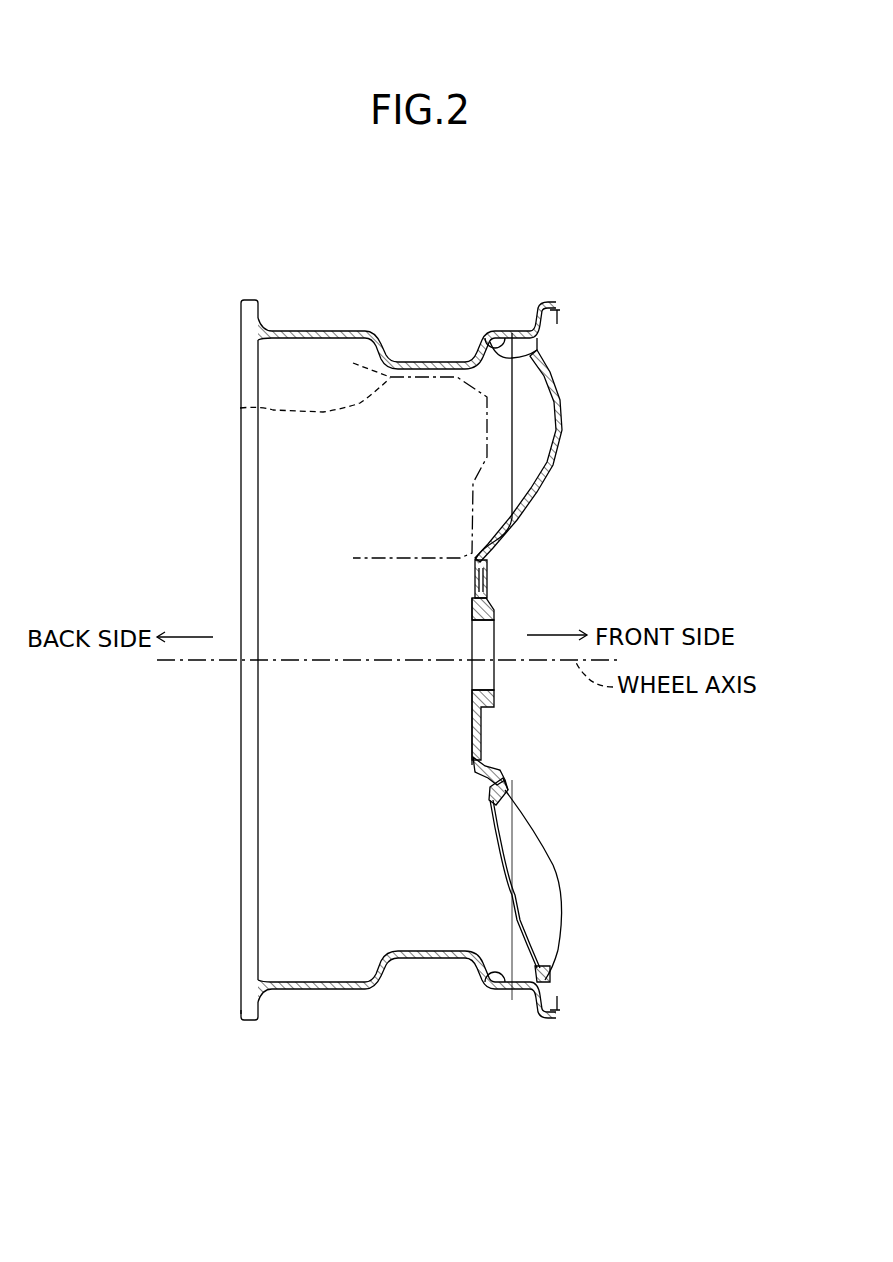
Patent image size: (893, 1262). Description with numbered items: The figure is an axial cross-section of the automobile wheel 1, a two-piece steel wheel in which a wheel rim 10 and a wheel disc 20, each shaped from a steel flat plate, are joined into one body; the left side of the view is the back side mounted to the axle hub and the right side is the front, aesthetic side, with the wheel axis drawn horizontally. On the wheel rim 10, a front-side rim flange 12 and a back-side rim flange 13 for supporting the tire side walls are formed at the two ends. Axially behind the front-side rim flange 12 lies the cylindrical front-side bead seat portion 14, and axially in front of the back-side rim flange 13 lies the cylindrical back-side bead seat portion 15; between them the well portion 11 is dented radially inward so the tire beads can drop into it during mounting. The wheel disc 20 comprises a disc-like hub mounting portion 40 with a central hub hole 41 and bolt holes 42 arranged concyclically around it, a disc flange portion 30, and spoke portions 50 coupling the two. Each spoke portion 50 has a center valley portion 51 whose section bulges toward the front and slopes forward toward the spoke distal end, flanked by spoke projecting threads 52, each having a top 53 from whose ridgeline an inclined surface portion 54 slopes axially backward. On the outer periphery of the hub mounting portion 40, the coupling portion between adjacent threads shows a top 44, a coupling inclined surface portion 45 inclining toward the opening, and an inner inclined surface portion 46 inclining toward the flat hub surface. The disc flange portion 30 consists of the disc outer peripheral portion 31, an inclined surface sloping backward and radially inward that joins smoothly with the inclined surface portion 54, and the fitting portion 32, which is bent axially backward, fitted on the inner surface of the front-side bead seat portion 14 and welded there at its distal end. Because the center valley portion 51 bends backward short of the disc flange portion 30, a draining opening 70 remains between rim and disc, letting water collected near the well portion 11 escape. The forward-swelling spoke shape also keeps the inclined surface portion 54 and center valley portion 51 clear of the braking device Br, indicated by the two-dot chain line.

The automobile wheel 1 is at (628, 247).
The wheel rim 10 is at (238, 384).
The well portion 11 is at (408, 960).
The front-side rim flange 12 is at (545, 1019).
The back-side rim flange 13 is at (248, 1019).
The front-side bead seat portion 14 is at (505, 994).
The back-side bead seat portion 15 is at (280, 991).
The wheel disc 20 is at (555, 862).
The disc flange portion 30 is at (508, 943).
The disc outer peripheral portion 31 is at (547, 972).
The fitting portion 32 is at (492, 334).
The hub mounting portion 40 is at (481, 735).
The hub hole 41 is at (497, 690).
The bolt hole 42 is at (487, 578).
The top 44 is at (510, 774).
The coupling inclined surface portion 45 is at (497, 798).
The inner inclined surface portion 46 is at (500, 763).
The spoke portion 50 is at (564, 425).
The center valley portion 51 is at (512, 514).
The spoke projecting thread 52 is at (538, 488).
The top 53 is at (558, 943).
The inclined surface portion 54 is at (528, 845).
The draining opening 70 is at (545, 343).
The braking device Br is at (240, 408).